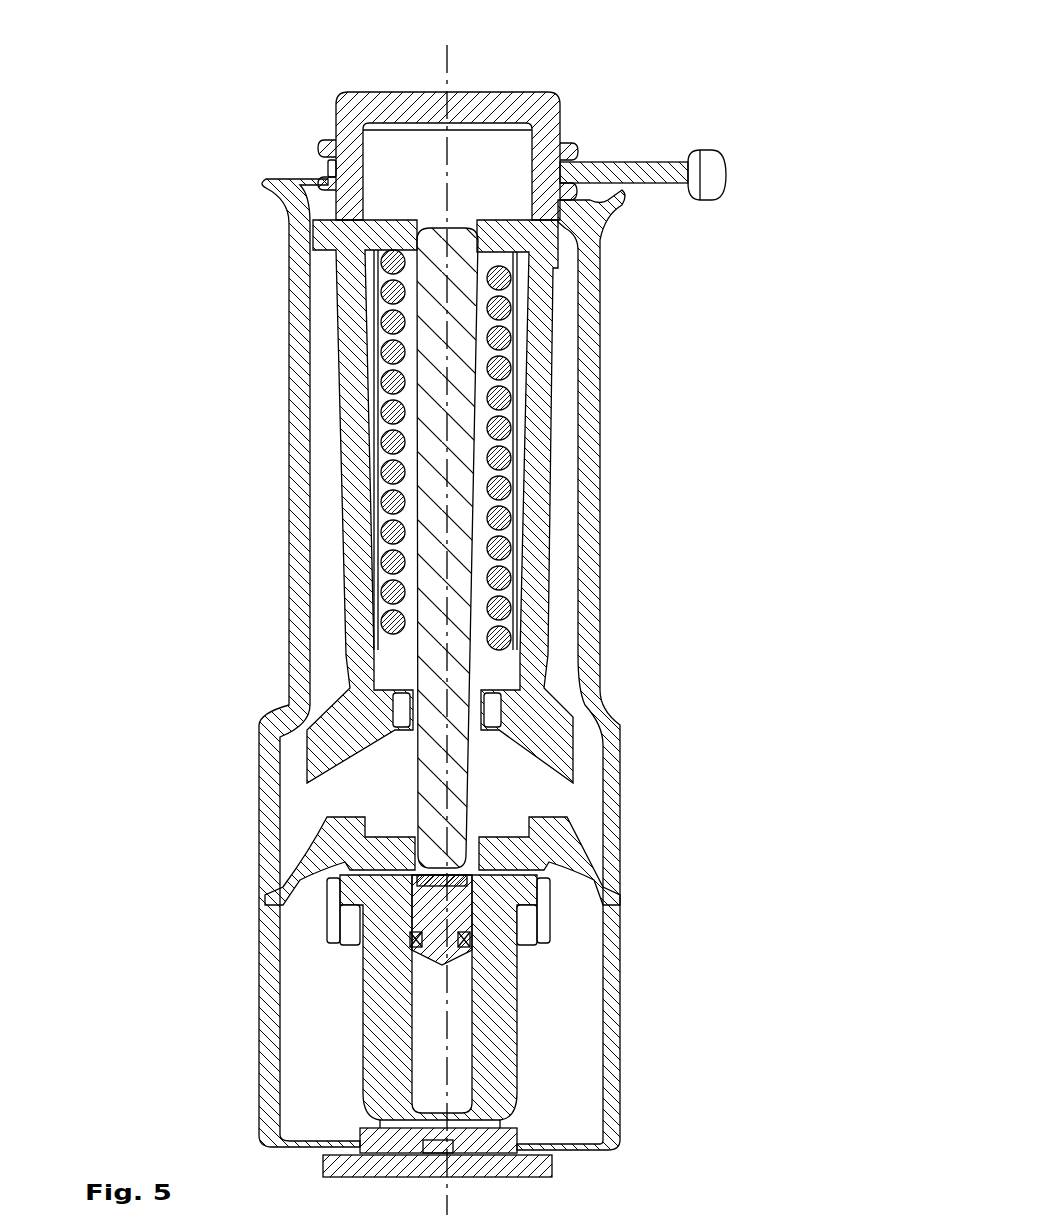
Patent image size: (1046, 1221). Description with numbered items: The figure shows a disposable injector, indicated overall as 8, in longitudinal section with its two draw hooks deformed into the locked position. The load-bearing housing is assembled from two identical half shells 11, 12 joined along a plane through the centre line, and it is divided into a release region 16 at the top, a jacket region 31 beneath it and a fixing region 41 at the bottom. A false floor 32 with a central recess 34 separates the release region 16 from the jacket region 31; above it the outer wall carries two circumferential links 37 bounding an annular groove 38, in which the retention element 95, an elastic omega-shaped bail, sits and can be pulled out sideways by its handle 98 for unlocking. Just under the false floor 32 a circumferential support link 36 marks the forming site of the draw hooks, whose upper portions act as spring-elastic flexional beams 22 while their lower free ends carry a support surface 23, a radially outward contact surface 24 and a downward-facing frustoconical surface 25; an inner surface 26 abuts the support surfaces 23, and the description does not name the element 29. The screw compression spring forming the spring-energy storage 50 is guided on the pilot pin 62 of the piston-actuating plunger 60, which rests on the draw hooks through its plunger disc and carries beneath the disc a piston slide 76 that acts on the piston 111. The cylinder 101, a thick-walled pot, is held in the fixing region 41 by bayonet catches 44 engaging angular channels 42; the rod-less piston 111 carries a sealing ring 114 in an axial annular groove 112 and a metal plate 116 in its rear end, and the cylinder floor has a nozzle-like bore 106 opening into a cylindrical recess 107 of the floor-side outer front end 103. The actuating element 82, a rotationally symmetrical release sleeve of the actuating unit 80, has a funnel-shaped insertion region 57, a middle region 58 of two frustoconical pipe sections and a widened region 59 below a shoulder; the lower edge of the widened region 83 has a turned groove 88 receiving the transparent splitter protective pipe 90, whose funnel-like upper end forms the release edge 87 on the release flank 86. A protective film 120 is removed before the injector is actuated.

The valve housing 8 is at (625, 718).
The half shell 11 is at (345, 208).
The half shell 12 is at (555, 217).
The release region 16 is at (290, 168).
The flexional beam 22 is at (355, 537).
The support surface 23 is at (405, 652).
The contact surface 24 is at (307, 753).
The frustoconical surface 25 is at (383, 793).
The inner surface 26 is at (403, 702).
The inner wall 29 is at (335, 402).
The jacket region 31 is at (323, 495).
The false floor 32 is at (538, 238).
The central recess 34 is at (313, 235).
The circumferential support link 36 is at (320, 247).
The circumferential links 37 is at (568, 192).
The annular groove 38 is at (298, 166).
The fixing region 41 is at (318, 952).
The angular channels 42 is at (264, 940).
The bayonet catches 44 is at (350, 922).
The spring-energy storage 50 is at (520, 338).
The insertion region 57 is at (627, 212).
The middle region 58 is at (600, 516).
The widened region 59 is at (627, 818).
The piston-actuating plunger 60 is at (523, 662).
The pilot pin 62 is at (455, 395).
The piston slide 76 is at (453, 802).
The actuating unit 80 is at (286, 315).
The actuating element 82 is at (300, 445).
The lower edge of the widened region 83 is at (268, 772).
The release flank 86 is at (350, 847).
The release edge 87 is at (362, 813).
The turned groove 88 is at (347, 892).
The splitter protective pipe 90 is at (266, 1026).
The retention element 95 is at (650, 170).
The handle 98 is at (713, 172).
The cylinder 101 is at (497, 997).
The floor-side outer front end 103 is at (465, 1157).
The nozzle-like bore 106 is at (452, 1135).
The cylindrical recess 107 is at (552, 1172).
The piston 111 is at (451, 903).
The axial annular groove 112 is at (482, 932).
The sealing ring 114 is at (475, 945).
The metal plate 116 is at (456, 877).
The protective film 120 is at (333, 1165).